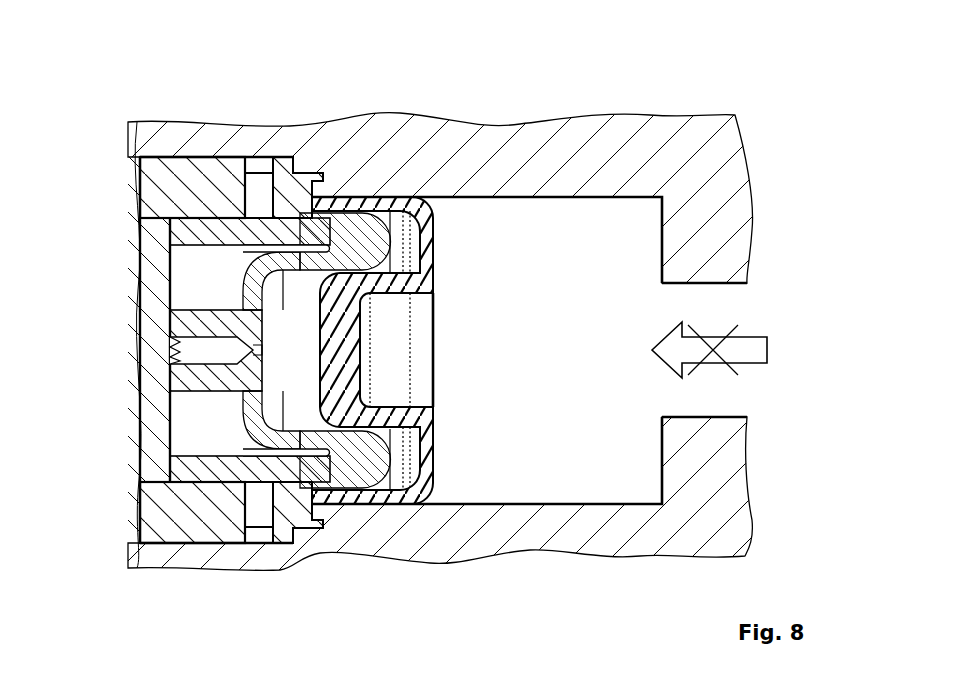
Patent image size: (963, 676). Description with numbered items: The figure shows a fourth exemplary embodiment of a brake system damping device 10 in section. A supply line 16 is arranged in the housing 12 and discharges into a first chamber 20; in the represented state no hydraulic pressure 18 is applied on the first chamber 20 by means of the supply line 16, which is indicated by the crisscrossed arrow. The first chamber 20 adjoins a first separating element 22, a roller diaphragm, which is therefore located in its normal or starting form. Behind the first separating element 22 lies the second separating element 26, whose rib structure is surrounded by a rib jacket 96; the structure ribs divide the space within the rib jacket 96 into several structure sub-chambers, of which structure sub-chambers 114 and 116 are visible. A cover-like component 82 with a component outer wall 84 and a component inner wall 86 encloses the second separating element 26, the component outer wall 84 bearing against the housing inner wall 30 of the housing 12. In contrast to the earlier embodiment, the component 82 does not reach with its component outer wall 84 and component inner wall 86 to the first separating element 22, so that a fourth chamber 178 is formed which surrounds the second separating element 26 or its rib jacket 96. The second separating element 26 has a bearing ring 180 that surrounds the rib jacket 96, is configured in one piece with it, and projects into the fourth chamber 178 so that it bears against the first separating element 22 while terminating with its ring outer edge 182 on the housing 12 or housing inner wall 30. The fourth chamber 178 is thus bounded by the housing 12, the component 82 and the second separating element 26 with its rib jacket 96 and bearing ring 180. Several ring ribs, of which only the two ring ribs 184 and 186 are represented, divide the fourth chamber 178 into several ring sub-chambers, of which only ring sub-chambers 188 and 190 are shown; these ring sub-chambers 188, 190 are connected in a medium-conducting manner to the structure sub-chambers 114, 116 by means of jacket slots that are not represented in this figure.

The brake system damping device 10 is at (769, 113).
The housing 12 is at (713, 165).
The supply line 16 is at (735, 303).
The hydraulic pressure 18 is at (745, 353).
The first chamber 20 is at (640, 476).
The first separating element 22 is at (389, 206).
The second separating element 26 is at (185, 214).
The housing inner wall 30 is at (616, 197).
The component 82 is at (172, 152).
The component outer wall 84 is at (183, 162).
The component inner wall 86 is at (192, 236).
The rib jacket 96 is at (200, 473).
The structure sub-chamber 114 is at (202, 290).
The structure sub-chamber 116 is at (202, 413).
The fourth chamber 178 is at (250, 160).
The bearing ring 180 is at (263, 207).
The ring outer edge 182 is at (293, 160).
The ring rib 184 is at (267, 183).
The ring rib 186 is at (255, 517).
The ring sub-chamber 188 is at (424, 221).
The ring sub-chamber 190 is at (413, 470).